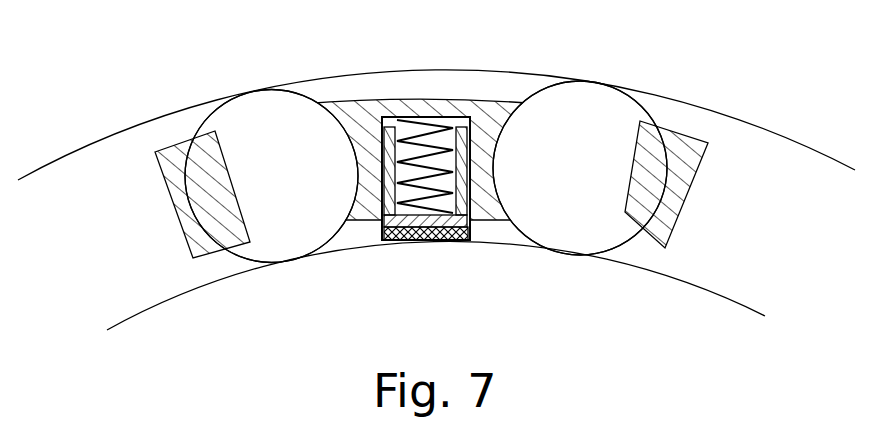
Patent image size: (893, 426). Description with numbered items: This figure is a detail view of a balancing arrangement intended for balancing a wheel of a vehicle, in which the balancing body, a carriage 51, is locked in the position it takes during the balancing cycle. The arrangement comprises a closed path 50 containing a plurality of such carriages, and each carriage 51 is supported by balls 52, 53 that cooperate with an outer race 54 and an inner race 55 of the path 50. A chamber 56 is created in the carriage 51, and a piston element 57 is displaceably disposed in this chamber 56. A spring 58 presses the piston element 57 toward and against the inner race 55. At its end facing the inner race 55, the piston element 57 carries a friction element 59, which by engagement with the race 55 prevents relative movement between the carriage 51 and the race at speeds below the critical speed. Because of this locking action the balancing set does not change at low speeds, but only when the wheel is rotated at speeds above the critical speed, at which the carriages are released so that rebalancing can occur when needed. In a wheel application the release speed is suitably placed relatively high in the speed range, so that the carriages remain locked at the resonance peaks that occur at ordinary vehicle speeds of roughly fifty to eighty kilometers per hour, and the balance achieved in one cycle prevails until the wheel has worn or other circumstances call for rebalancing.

The closed path 50 is at (117, 116).
The carriage 51 is at (428, 101).
The ball 52 is at (242, 110).
The ball 53 is at (593, 103).
The outer race 54 is at (88, 146).
The inner race 55 is at (123, 322).
The chamber 56 is at (388, 116).
The piston element 57 is at (478, 116).
The spring 58 is at (447, 115).
The friction element 59 is at (428, 242).